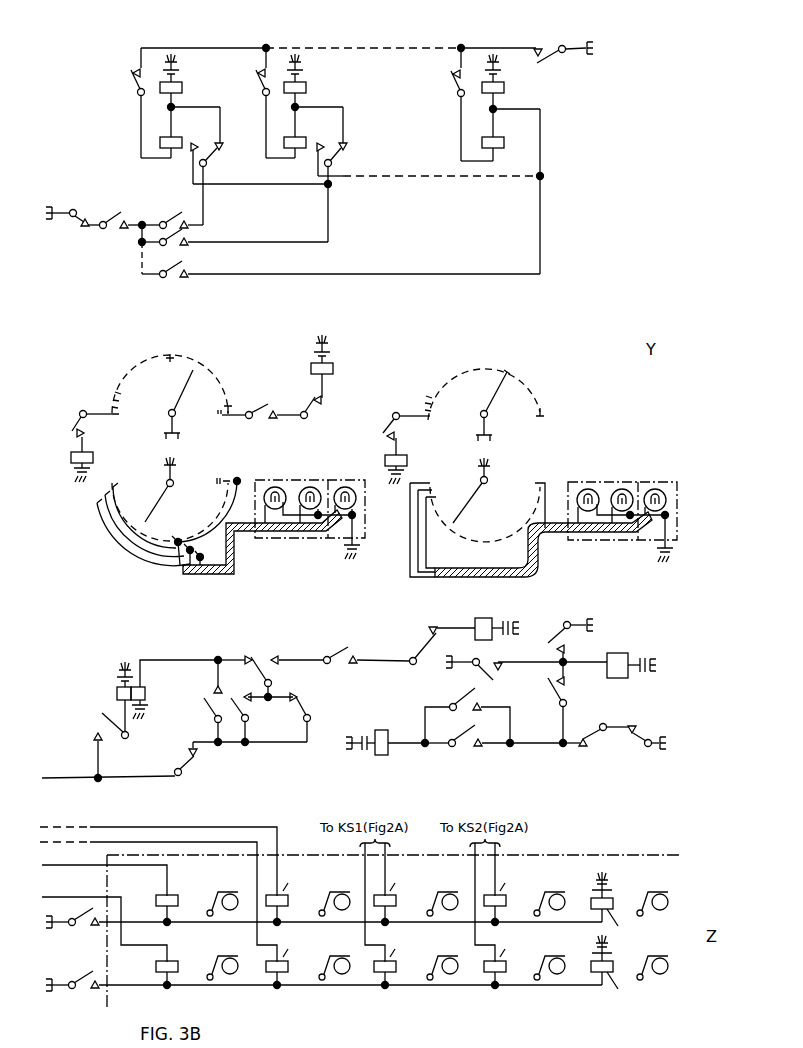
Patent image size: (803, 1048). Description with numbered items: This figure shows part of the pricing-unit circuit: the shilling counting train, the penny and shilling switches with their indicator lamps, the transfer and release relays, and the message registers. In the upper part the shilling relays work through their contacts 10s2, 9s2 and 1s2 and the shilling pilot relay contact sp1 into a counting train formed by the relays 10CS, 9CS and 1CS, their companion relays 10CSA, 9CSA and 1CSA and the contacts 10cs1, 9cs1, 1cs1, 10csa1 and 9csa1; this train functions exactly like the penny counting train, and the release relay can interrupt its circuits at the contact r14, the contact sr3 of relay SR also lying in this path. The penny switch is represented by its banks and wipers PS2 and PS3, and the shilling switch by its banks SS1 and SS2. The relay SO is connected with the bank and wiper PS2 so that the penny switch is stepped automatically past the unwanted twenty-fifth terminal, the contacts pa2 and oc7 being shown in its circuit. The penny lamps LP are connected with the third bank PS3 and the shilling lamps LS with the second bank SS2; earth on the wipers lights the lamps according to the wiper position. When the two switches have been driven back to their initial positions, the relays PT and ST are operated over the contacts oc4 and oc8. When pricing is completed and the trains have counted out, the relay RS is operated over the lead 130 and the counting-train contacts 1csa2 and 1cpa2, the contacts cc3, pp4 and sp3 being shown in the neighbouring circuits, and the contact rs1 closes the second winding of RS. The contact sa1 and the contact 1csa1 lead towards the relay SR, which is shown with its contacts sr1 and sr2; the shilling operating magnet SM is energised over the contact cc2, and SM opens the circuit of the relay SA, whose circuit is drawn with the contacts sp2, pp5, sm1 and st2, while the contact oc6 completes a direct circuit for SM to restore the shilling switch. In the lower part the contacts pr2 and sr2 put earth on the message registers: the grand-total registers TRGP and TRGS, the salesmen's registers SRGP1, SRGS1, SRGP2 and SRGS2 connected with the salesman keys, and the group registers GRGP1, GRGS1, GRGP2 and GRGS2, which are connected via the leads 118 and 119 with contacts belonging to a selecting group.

The relay contact 10cs1 is at (129, 103).
The relay 10CS is at (193, 82).
The relay 10CSA is at (193, 132).
The relay contact 10csa1 is at (249, 166).
The relay contact 9cs1 is at (260, 103).
The relay 9CS is at (312, 82).
The relay 9CSA is at (313, 132).
The relay contact 9csa1 is at (417, 174).
The relay contact 1cs1 is at (456, 104).
The relay 1CS is at (510, 83).
The relay 1CSA is at (510, 135).
The relay contact sp1 is at (527, 57).
The release relay contact r14 is at (76, 211).
The relay contact sr3 is at (117, 227).
The relay contact 10s2 is at (171, 215).
The relay contact 9s2 is at (234, 235).
The relay contact 1s2 is at (343, 193).
The penny switch bank and wiper PS2 is at (170, 396).
The relay OC contact oc4 is at (92, 432).
The penny switch home relay PT is at (70, 466).
The step-over relay SO is at (336, 366).
The relay contact oc7 is at (306, 414).
The relay contact pa2 is at (247, 406).
The penny switch third bank PS3 is at (169, 511).
The penny lamps LP is at (310, 510).
The relay OC contact oc8 is at (392, 427).
The shilling switch home relay ST is at (380, 461).
The shilling switch bank and wiper SS1 is at (484, 405).
The shilling switch second bank SS2 is at (477, 517).
The shilling lamps LS is at (622, 512).
The relay RS is at (156, 696).
The relay RS contact rs1 is at (103, 747).
The lead 130 is at (108, 768).
The relay contact cc3 is at (241, 759).
The counting train relay contact 1csa2 is at (195, 701).
The counting train relay contact 1cpa2 is at (261, 719).
The relay contact pp4 is at (314, 717).
The relay contact sp3 is at (271, 670).
The relay contact sa1 is at (367, 651).
The relay contact 1csa1 is at (443, 646).
The shilling relay SR is at (494, 618).
The relay contact sr1 is at (526, 670).
The relay CC contact cc2 is at (571, 640).
The shilling switch operating magnet SM is at (630, 654).
The relay OC contact oc6 is at (570, 704).
The relay SA is at (387, 731).
The relay contact sp2 is at (494, 745).
The relay contact pp5 is at (467, 715).
The relay contact sm1 is at (596, 739).
The relay contact st2 is at (647, 731).
The lead 118 is at (104, 871).
The lead 119 is at (104, 920).
The relay PR contact pr2 is at (72, 928).
The relay SR contact sr2 is at (72, 991).
The group register GRGP1 is at (147, 899).
The group register GRGS1 is at (143, 972).
The group register GRGP2 is at (211, 874).
The group register GRGS2 is at (211, 913).
The salesman register SRGP1 is at (405, 882).
The salesman register SRGS1 is at (401, 914).
The salesman register SRGP2 is at (515, 882).
The salesman register SRGS2 is at (511, 914).
The grand total penny register TRGP is at (624, 908).
The grand total shilling register TRGS is at (624, 971).